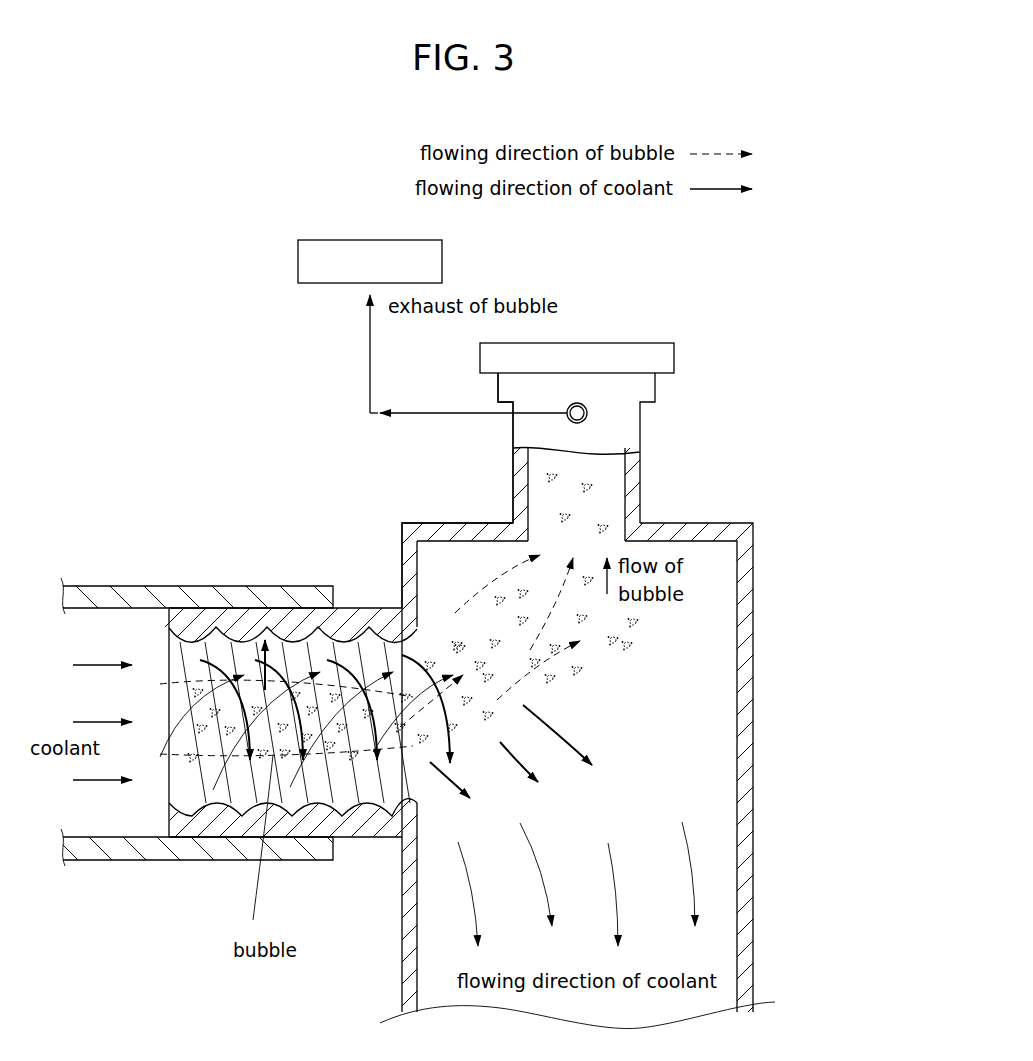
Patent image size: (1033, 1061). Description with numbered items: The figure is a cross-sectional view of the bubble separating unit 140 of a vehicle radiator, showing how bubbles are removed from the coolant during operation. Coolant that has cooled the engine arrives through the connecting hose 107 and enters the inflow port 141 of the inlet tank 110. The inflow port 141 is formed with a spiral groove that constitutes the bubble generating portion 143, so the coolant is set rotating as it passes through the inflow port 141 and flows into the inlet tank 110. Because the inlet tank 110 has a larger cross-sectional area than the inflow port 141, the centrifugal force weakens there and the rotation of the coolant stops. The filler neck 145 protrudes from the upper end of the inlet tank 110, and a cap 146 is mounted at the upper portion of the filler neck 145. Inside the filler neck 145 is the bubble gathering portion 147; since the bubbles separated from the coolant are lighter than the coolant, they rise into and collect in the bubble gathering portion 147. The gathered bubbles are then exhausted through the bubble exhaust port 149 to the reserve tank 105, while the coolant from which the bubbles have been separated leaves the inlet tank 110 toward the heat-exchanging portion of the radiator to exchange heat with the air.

The reserve tank 105 is at (370, 238).
The connecting hose 107 is at (112, 600).
The inlet tank 110 is at (743, 843).
The bubble removing device 140 is at (382, 490).
The inflow port 141 is at (370, 617).
The bubble generating portion 143 is at (262, 692).
The filler neck 145 is at (628, 462).
The cap 146 is at (660, 355).
The bubble gathering portion 147 is at (594, 509).
The bubble exhaust port 149 is at (587, 408).